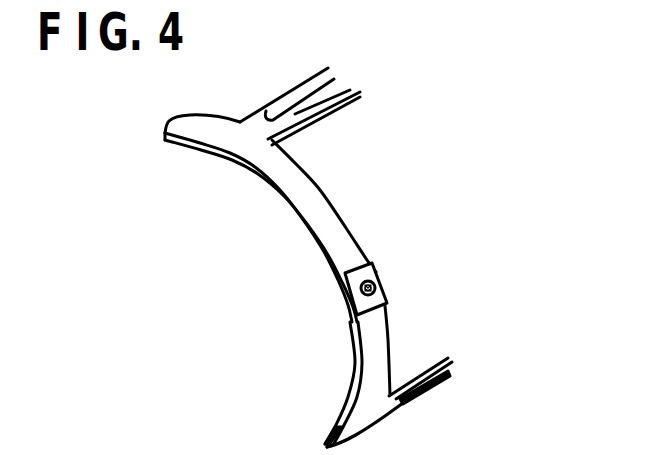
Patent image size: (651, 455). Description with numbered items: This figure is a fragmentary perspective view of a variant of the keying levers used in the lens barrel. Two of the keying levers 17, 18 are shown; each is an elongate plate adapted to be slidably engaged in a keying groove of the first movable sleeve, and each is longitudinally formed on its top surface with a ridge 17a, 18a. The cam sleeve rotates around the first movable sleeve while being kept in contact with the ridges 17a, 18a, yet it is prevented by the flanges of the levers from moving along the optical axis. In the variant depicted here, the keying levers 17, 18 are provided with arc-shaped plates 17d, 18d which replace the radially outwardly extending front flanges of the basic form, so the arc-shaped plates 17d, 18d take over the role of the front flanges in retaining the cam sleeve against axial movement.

The keying lever 17 is at (292, 113).
The ridge 17a is at (310, 78).
The arc-shaped plate 17d is at (313, 208).
The keying lever 18 is at (433, 360).
The ridge 18a is at (421, 394).
The arc-shaped plate 18d is at (376, 379).